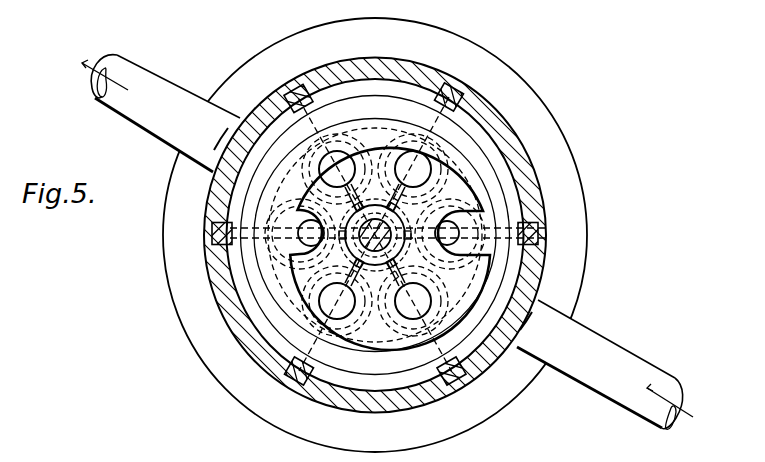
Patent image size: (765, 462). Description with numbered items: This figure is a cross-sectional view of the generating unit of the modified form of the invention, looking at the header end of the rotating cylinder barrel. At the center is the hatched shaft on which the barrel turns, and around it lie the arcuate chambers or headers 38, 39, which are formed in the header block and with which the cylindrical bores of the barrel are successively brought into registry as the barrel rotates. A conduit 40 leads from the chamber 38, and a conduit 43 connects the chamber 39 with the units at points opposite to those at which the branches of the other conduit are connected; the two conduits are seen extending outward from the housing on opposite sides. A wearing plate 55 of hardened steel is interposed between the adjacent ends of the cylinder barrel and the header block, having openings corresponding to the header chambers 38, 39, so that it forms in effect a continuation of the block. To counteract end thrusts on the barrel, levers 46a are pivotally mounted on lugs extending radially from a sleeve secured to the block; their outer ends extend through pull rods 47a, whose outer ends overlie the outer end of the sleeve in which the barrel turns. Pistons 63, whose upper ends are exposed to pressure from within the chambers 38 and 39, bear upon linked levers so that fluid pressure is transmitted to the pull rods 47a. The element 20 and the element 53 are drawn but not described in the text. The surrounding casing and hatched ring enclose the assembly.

The casing 20 is at (527, 165).
The arcuate chamber or header 38 is at (227, 150).
The arcuate chamber or header 39 is at (522, 326).
The conduit 40 is at (184, 103).
The conduit 43 is at (597, 343).
The levers 46a is at (330, 65).
The pull rods 47a is at (293, 87).
The planet gears 53 is at (378, 125).
The wearing plate 55 is at (383, 93).
The pistons 63 is at (483, 122).